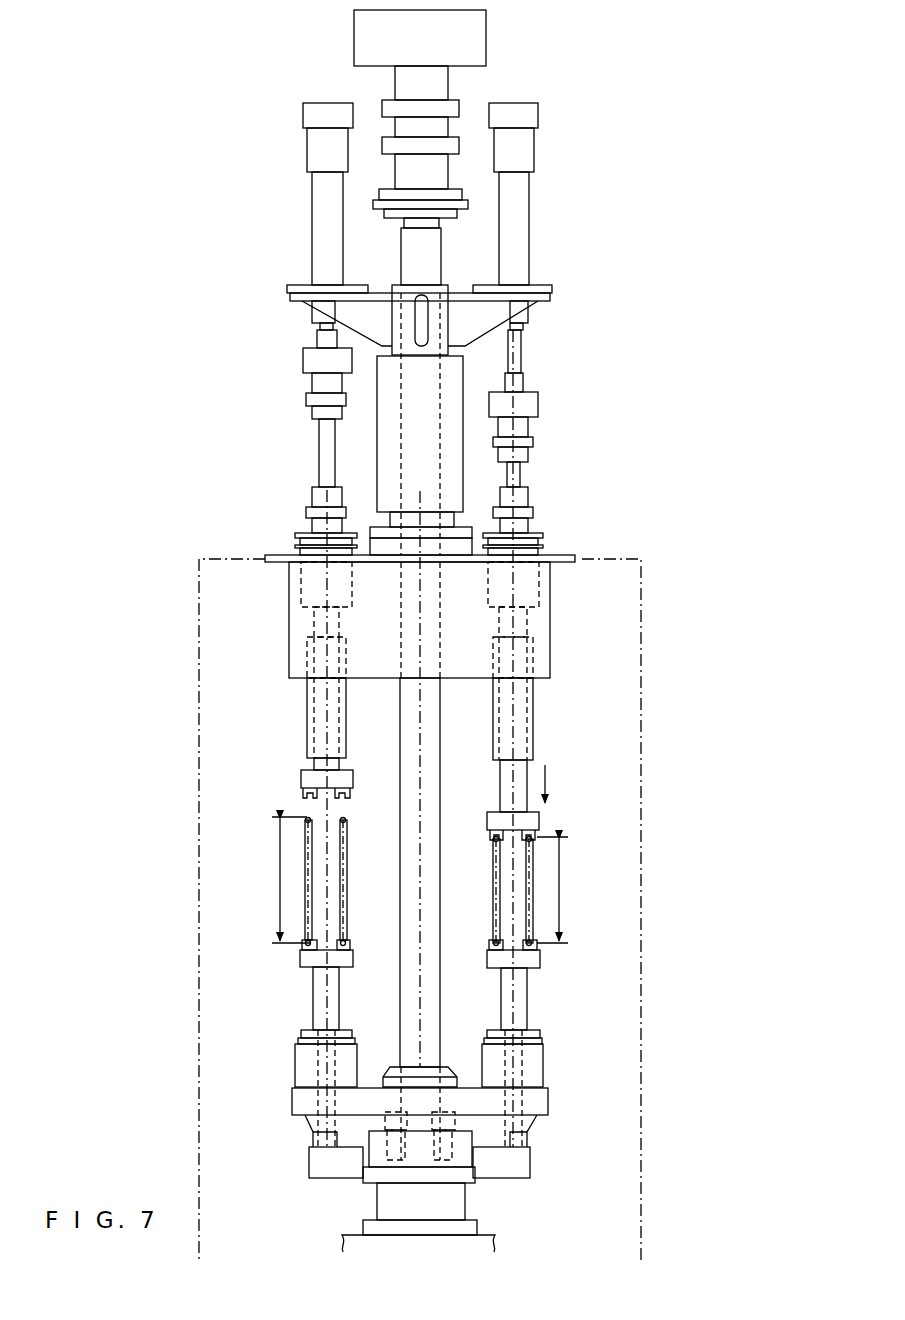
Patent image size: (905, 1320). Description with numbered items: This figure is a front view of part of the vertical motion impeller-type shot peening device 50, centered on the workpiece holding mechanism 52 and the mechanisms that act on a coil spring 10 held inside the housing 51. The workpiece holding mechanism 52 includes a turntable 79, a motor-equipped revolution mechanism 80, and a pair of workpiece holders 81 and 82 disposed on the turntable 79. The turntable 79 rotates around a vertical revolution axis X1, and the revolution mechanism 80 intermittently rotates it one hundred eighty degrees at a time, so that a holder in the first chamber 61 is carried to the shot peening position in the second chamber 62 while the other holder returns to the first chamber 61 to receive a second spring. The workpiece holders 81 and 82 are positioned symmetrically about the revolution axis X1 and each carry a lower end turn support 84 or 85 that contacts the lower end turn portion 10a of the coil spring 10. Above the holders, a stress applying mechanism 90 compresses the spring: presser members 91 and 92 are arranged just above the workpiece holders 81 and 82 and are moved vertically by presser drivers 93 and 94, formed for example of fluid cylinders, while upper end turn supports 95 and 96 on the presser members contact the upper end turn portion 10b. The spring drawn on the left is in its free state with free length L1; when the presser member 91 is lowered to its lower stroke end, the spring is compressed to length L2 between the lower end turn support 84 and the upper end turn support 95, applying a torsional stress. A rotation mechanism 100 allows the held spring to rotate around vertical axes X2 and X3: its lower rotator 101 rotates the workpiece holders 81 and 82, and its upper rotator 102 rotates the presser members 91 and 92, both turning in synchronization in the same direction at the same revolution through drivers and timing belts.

The motor-equipped revolution mechanism 80 is at (486, 38).
The vertical motion impeller-type shot peening device 50 is at (641, 232).
The stress applying mechanism 90 is at (306, 198).
The presser driver 93 is at (312, 250).
The presser driver 94 is at (529, 238).
The rotation mechanism 100 is at (560, 477).
The upper rotator 102 is at (540, 533).
The housing 51 is at (641, 596).
The first chamber 61 is at (228, 630).
The second chamber 62 is at (615, 658).
The revolution axis X1 is at (422, 738).
The vertical axis X2 is at (323, 730).
The vertical axis X3 is at (516, 720).
The presser member 91 is at (305, 773).
The presser member 92 is at (538, 822).
The upper end turn support 95 is at (302, 795).
The upper end turn support 96 is at (540, 838).
The coil spring 10 is at (346, 895).
The lower end turn portion 10a is at (347, 940).
The upper end turn portion 10b is at (345, 819).
The free length L1 is at (281, 880).
The compressed length L2 is at (566, 890).
The lower end turn support 84 is at (302, 946).
The lower end turn support 85 is at (540, 952).
The workpiece holder 81 is at (312, 962).
The workpiece holder 82 is at (528, 968).
The workpiece holding mechanism 52 is at (293, 1008).
The turntable 79 is at (549, 1100).
The lower rotator 101 is at (530, 1165).